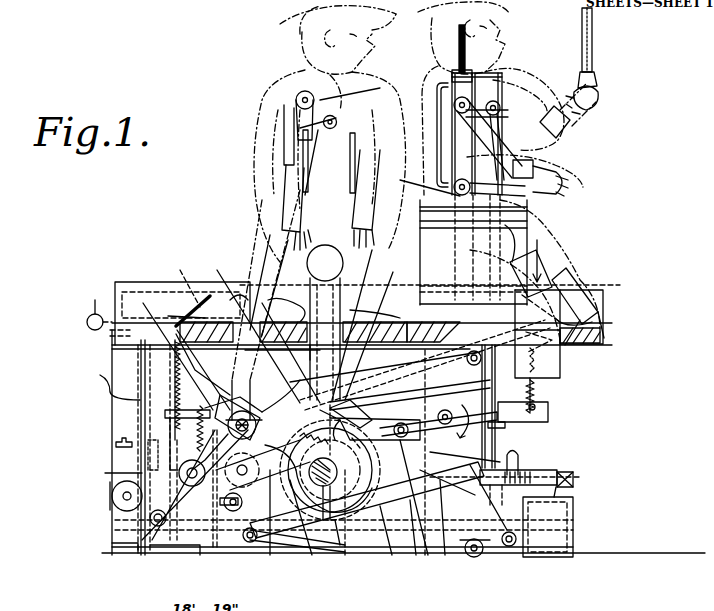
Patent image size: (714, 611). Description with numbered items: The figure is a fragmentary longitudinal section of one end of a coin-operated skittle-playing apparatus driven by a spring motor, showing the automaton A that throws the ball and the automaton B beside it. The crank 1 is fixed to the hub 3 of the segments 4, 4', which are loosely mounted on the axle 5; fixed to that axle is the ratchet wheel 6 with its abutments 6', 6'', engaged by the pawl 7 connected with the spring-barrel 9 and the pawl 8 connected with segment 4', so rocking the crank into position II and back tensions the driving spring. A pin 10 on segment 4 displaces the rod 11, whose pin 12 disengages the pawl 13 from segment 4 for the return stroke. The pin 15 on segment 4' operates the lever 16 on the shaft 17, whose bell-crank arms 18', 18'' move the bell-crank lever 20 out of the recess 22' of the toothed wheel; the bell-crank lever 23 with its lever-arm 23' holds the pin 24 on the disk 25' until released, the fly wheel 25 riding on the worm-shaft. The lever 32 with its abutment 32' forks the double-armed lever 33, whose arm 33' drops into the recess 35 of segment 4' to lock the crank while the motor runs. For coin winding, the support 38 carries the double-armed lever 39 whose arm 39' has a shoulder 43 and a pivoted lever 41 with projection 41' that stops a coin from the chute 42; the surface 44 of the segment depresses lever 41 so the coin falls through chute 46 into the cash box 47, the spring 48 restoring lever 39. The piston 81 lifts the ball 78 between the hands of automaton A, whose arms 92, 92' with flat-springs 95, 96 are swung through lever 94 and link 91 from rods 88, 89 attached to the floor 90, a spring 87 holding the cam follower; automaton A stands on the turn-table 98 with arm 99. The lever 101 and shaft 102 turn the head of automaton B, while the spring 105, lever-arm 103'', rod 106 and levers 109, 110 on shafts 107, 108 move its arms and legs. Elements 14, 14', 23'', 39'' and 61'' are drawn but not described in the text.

The automaton A is at (260, 147).
The automaton B is at (430, 93).
The crank 1 is at (425, 478).
The hub 3 is at (367, 500).
The segment 4 is at (330, 470).
The segment 4' is at (388, 549).
The axle 5 is at (335, 545).
The ratchet wheel 6 is at (275, 529).
The abutment 6' is at (420, 365).
The abutment 6'' is at (343, 536).
The pawl 7 is at (415, 431).
The pawl 8 is at (352, 431).
The spring-barrel 9 is at (496, 392).
The pin 10 is at (338, 482).
The rod 11 is at (312, 556).
The pin 12 is at (248, 542).
The pawl 13 is at (300, 552).
The pivot 14 is at (227, 539).
The link 14' is at (440, 540).
The pin 15 is at (416, 555).
The lever 16 is at (255, 442).
The shaft 17 is at (150, 515).
The arm 18' is at (155, 462).
The lever arm 18'' is at (175, 565).
The bell-crank lever 20 is at (578, 478).
The recess 22' is at (98, 496).
The bell-crank lever 23 is at (482, 528).
The lever-arm 23' is at (548, 522).
The pivot 23'' is at (493, 525).
The pin 24 is at (502, 438).
The fly wheel 25 is at (526, 463).
The disk 25' is at (559, 455).
The lever 32 is at (539, 428).
The abutment 32' is at (465, 460).
The double-armed lever 33 is at (438, 410).
The lever-arm 33' is at (410, 394).
The recess 35 is at (377, 327).
The support 38 is at (186, 351).
The double-armed lever 39 is at (246, 425).
The lever-arm 39' is at (263, 465).
The wire 39'' is at (109, 385).
The lever 41 is at (199, 323).
The projection 41' is at (261, 330).
The chute 42 is at (446, 296).
The shoulder 43 is at (367, 316).
The surface 44 is at (454, 421).
The chute 46 is at (470, 557).
The cash box 47 is at (549, 538).
The spring 48 is at (192, 432).
The plate 61'' is at (138, 431).
The ball 78 is at (338, 258).
The piston 81 is at (310, 298).
The spring 87 is at (172, 382).
The rod 88 is at (155, 360).
The rod 89 is at (300, 360).
The floor 90 is at (559, 317).
The link 91 is at (330, 146).
The arm 92 is at (272, 115).
The arm 92' is at (364, 125).
The lever 94 is at (345, 100).
The flat-spring 95 is at (303, 158).
The flat-spring 96 is at (355, 180).
The turn-table 98 is at (340, 307).
The arm 99 is at (108, 318).
The lever 101 is at (537, 334).
The shaft 102 is at (473, 250).
The lever-arm 103'' is at (559, 401).
The spring 105 is at (558, 372).
The rod 106 is at (556, 384).
The shaft 107 is at (470, 118).
The shaft 108 is at (422, 186).
The lever 109 is at (490, 92).
The lever 110 is at (575, 178).
The position II is at (112, 470).